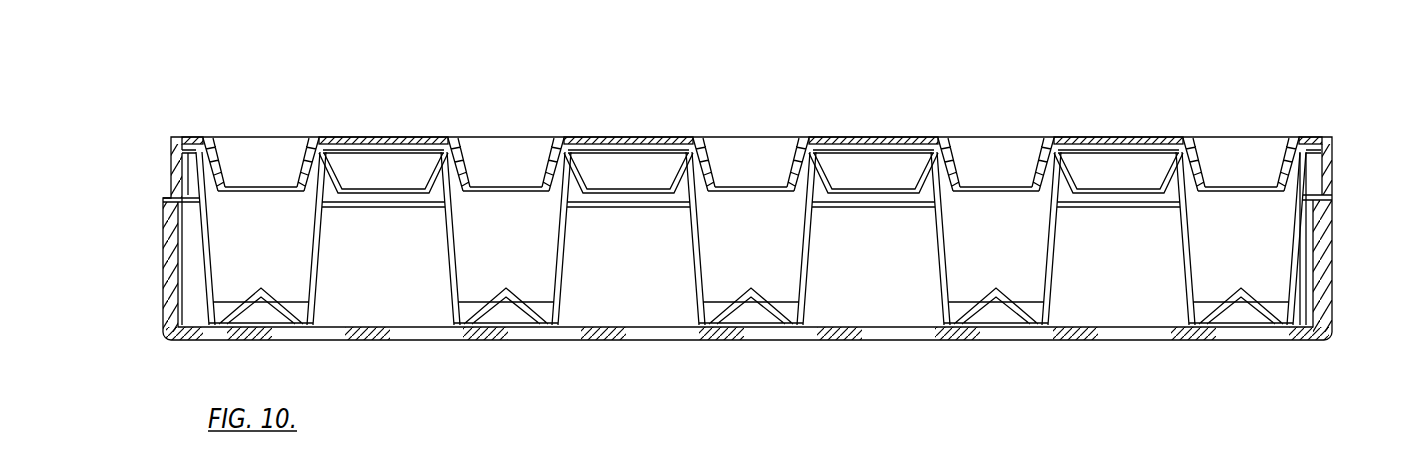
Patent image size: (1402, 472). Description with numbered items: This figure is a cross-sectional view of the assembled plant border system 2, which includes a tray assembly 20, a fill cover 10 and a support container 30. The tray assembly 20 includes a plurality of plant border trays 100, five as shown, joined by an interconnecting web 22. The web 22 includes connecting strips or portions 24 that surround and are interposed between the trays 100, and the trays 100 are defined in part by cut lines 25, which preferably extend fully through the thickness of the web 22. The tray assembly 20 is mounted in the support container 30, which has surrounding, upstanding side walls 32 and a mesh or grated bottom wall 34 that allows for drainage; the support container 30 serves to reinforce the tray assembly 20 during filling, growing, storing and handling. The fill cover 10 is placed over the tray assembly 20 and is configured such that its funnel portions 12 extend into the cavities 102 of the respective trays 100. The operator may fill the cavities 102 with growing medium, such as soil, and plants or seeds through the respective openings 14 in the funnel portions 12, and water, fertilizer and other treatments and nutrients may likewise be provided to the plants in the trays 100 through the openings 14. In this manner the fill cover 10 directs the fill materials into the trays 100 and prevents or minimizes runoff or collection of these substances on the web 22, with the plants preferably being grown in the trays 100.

The plant border system 2 is at (992, 78).
The fill cover 10 is at (403, 135).
The funnel portions 12 is at (222, 150).
The openings 14 is at (272, 132).
The tray assembly 20 is at (202, 248).
The interconnecting web 22 is at (867, 188).
The connecting strips or portions 24 is at (372, 190).
The cut lines 25 is at (357, 200).
The support container 30 is at (160, 287).
The side walls 32 is at (1327, 257).
The bottom wall 34 is at (1037, 332).
The plant border trays 100 is at (318, 268).
The cavities 102 is at (273, 250).